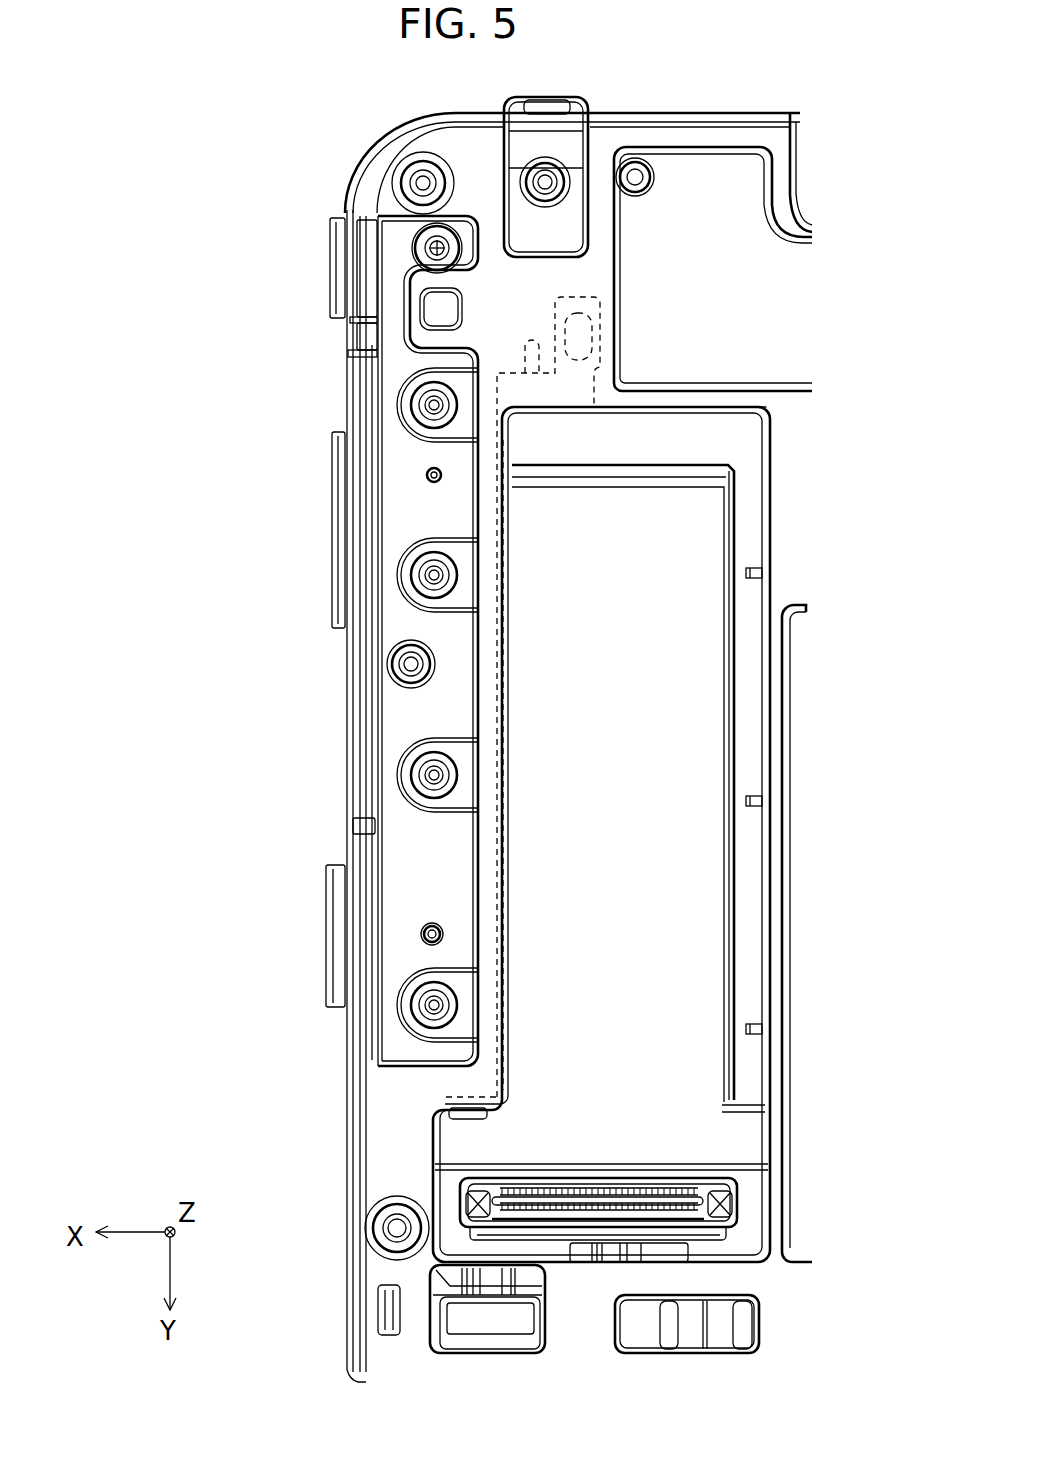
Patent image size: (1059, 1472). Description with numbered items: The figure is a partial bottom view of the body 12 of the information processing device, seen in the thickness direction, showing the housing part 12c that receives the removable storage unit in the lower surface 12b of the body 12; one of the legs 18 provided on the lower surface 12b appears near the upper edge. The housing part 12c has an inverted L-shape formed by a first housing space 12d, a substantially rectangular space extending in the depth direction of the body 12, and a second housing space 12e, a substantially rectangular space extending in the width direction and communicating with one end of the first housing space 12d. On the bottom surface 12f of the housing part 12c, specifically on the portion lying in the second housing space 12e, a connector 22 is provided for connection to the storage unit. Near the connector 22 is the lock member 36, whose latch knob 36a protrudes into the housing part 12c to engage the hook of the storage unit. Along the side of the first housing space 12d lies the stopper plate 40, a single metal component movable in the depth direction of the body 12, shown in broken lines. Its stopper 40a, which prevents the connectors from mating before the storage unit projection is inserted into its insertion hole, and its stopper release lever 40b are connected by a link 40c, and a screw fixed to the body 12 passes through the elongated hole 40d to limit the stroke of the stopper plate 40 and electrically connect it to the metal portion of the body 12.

The body 12 is at (397, 818).
The lower surface 12b is at (532, 326).
The housing part 12c is at (690, 910).
The first housing space 12d is at (690, 570).
The second housing space 12e is at (727, 1140).
The bottom surface 12f is at (636, 826).
The leg 18 is at (567, 124).
The connector 22 is at (598, 1183).
The lock member 36 is at (720, 1303).
The latch knob 36a is at (647, 1252).
The stopper plate 40 is at (495, 872).
The stopper 40a is at (467, 1119).
The stopper release lever 40b is at (640, 410).
The link 40c is at (503, 730).
The elongated hole 40d is at (578, 340).